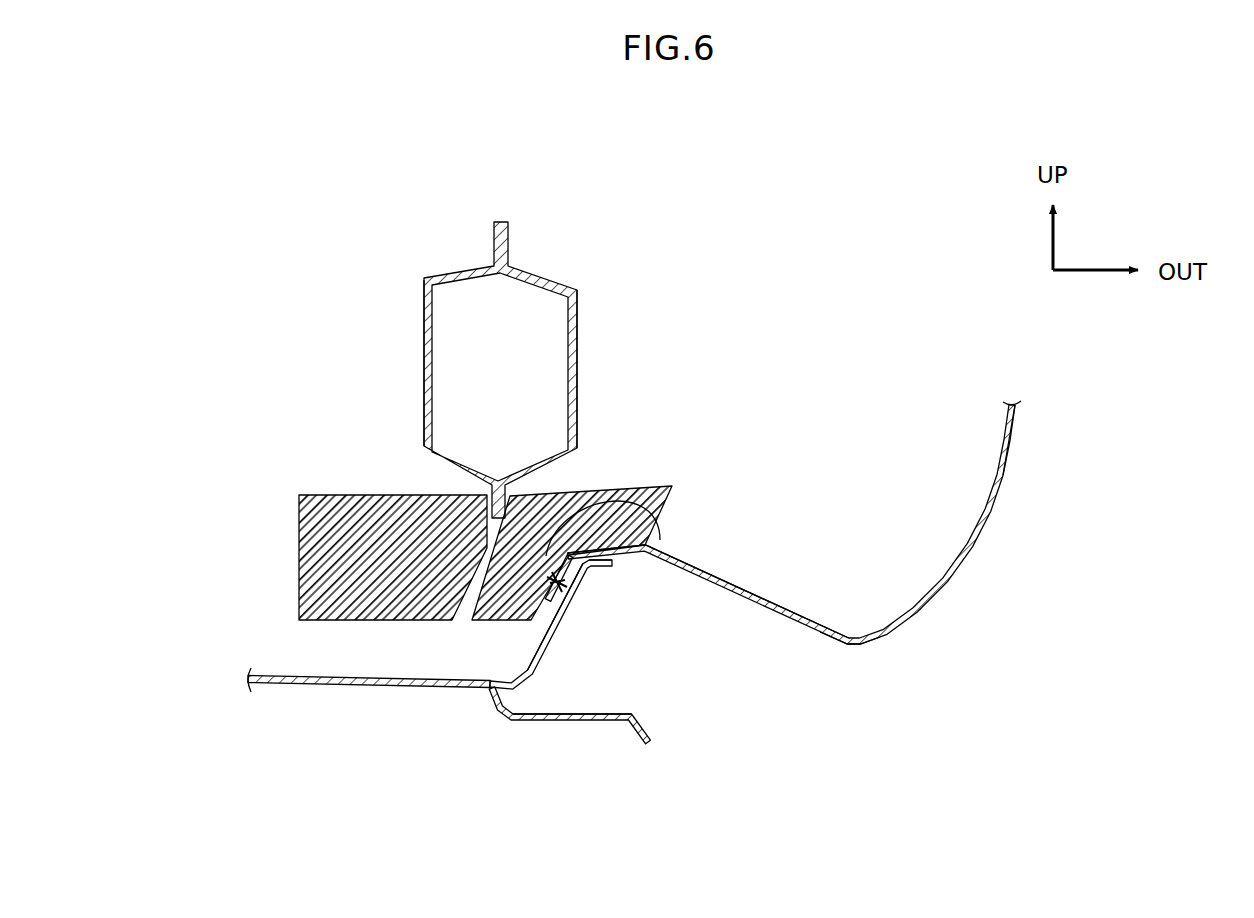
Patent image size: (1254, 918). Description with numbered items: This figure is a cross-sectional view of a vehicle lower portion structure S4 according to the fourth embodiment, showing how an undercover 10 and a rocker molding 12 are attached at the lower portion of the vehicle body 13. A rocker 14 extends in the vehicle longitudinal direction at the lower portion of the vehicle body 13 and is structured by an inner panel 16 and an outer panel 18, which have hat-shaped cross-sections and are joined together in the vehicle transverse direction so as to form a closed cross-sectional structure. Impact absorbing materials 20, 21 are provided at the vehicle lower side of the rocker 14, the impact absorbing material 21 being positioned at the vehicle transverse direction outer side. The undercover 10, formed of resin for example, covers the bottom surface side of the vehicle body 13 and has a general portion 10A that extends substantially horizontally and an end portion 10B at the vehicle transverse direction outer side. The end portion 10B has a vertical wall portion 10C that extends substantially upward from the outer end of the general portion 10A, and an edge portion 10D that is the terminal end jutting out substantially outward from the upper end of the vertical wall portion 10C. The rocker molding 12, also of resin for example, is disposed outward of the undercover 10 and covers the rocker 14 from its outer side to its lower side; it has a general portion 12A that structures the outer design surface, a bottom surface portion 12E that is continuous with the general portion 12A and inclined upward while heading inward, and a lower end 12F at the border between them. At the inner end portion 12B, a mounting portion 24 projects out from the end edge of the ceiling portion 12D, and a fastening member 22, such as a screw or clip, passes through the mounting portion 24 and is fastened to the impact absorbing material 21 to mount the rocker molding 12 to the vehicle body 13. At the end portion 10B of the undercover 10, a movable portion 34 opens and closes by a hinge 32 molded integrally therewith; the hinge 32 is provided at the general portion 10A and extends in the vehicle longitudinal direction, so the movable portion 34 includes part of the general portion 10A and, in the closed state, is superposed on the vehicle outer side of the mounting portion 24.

The undercover 10 is at (492, 685).
The general portion 10A is at (413, 690).
The end portion 10B is at (668, 615).
The vertical wall portion 10C is at (577, 600).
The edge portion 10D is at (607, 569).
The rocker molding 12 is at (1030, 496).
The general portion 12A is at (1018, 418).
The end portion 12B is at (782, 455).
The ceiling portion 12D is at (656, 540).
The bottom surface portion 12E is at (790, 633).
The lower end 12F is at (849, 645).
The vehicle body 13 is at (573, 234).
The rocker 14 is at (438, 251).
The inner panel 16 is at (424, 352).
The outer panel 18 is at (578, 345).
The impact absorbing material 20 is at (378, 493).
The impact absorbing material 21 is at (608, 487).
The fastening member 22 is at (548, 606).
The mounting portion 24 is at (652, 511).
The hinge 32 is at (489, 698).
The movable portion 34 is at (601, 722).
The vehicle lower portion structure S4 is at (797, 217).